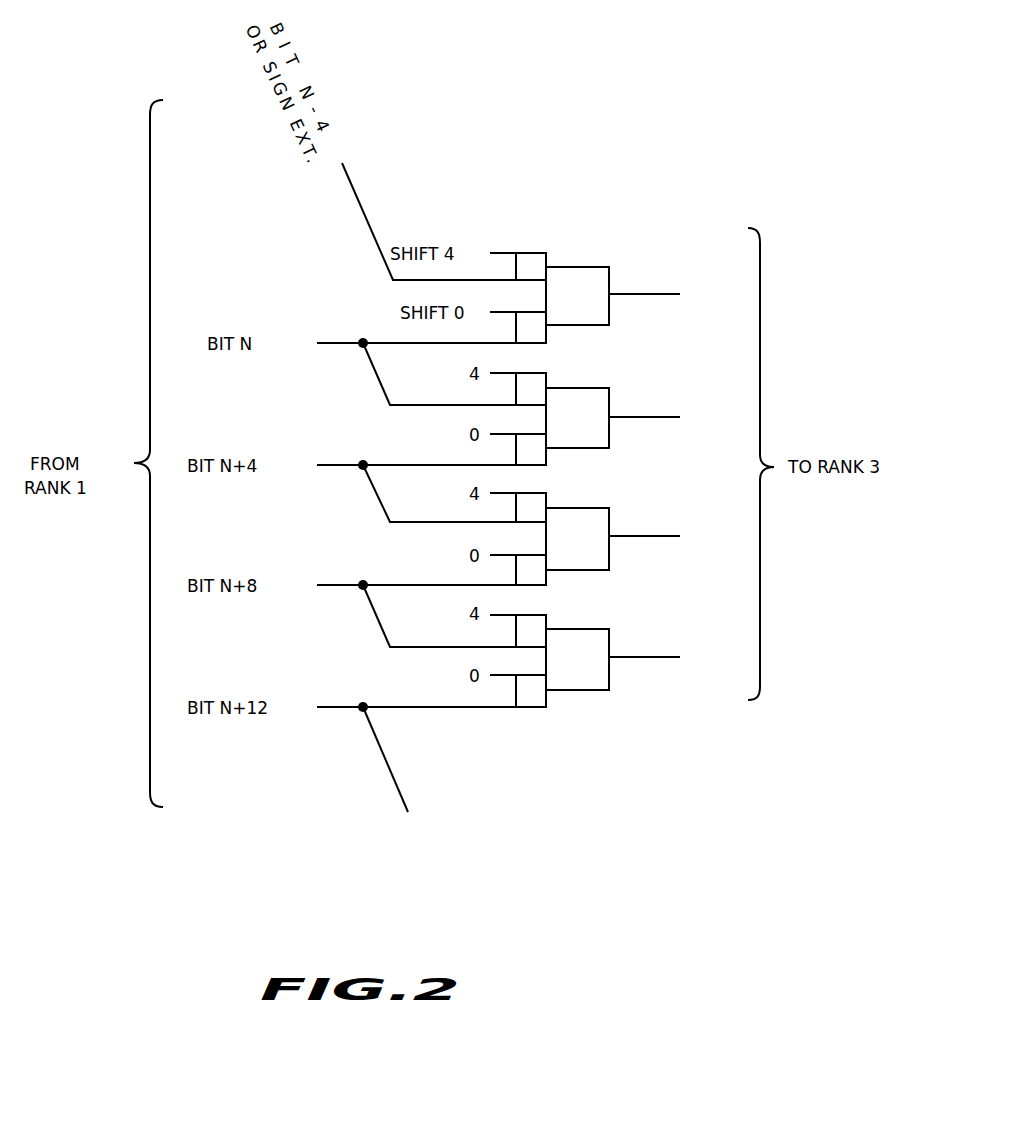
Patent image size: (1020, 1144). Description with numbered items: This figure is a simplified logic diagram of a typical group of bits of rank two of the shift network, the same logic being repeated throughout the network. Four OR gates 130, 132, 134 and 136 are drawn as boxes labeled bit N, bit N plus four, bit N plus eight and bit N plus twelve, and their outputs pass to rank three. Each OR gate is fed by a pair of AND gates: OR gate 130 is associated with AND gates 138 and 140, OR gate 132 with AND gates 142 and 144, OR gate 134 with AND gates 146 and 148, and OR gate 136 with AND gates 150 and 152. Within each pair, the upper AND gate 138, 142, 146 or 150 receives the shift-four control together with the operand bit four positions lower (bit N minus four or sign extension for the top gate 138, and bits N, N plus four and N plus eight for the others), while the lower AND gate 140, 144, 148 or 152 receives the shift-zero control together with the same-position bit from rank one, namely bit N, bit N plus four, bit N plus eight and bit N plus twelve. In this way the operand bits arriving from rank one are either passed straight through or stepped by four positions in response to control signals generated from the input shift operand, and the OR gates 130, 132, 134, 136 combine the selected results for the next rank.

The OR gate 130 is at (592, 266).
The OR gate 132 is at (607, 387).
The OR gate 134 is at (610, 509).
The OR gate 136 is at (610, 630).
The AND gate 138 is at (533, 252).
The AND gate 140 is at (546, 343).
The AND gate 142 is at (516, 394).
The AND gate 144 is at (546, 465).
The AND gate 146 is at (548, 500).
The AND gate 148 is at (546, 585).
The AND gate 150 is at (550, 615).
The AND gate 152 is at (525, 707).